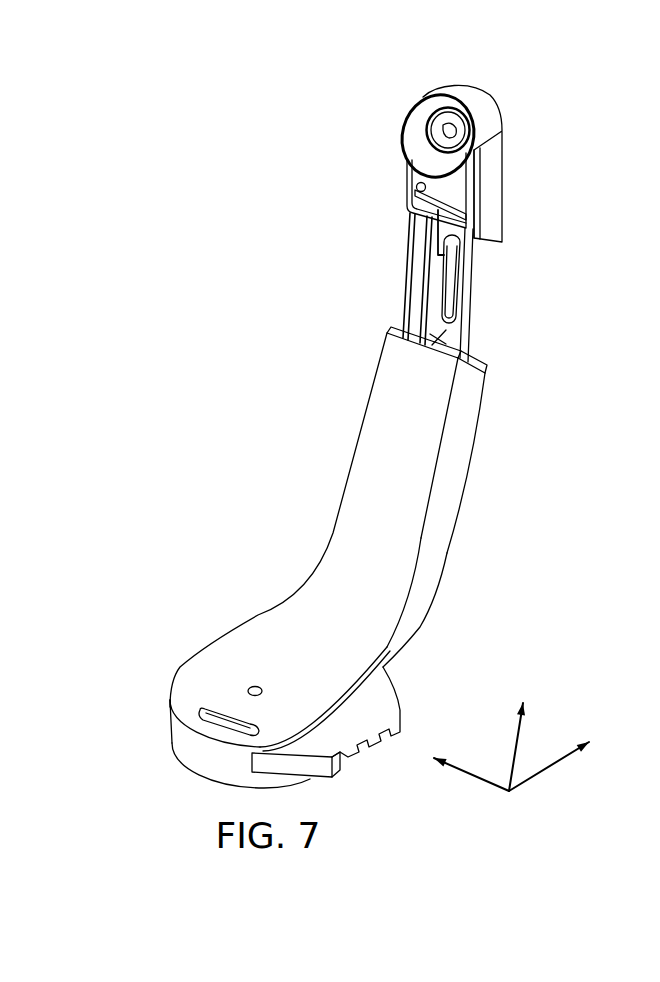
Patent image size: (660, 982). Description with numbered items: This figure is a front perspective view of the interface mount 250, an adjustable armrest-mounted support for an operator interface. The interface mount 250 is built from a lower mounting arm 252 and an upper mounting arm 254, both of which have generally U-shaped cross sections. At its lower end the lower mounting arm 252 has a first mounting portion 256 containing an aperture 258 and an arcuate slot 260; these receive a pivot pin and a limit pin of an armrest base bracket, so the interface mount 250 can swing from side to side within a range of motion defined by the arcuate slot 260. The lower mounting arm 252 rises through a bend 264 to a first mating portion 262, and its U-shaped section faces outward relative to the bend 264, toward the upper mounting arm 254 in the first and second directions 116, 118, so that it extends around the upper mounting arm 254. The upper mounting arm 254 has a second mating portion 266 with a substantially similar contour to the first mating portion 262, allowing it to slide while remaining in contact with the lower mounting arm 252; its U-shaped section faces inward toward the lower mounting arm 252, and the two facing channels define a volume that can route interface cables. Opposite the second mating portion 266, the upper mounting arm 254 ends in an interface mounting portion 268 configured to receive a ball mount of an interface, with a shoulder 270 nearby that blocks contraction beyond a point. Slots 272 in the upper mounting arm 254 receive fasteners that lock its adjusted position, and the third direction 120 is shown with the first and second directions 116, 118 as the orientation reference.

The interface mount 250 is at (250, 405).
The lower mounting arm 252 is at (422, 628).
The upper mounting arm 254 is at (467, 342).
The first mounting portion 256 is at (152, 712).
The aperture 258 is at (249, 688).
The arcuate slot 260 is at (200, 778).
The first mating portion 262 is at (350, 380).
The bend 264 is at (300, 558).
The second mating portion 266 is at (500, 440).
The interface mounting portion 268 is at (465, 107).
The shoulder 270 is at (412, 216).
The slots 272 is at (432, 336).
The first direction 116 is at (550, 770).
The second direction 118 is at (518, 752).
The third direction 120 is at (473, 778).